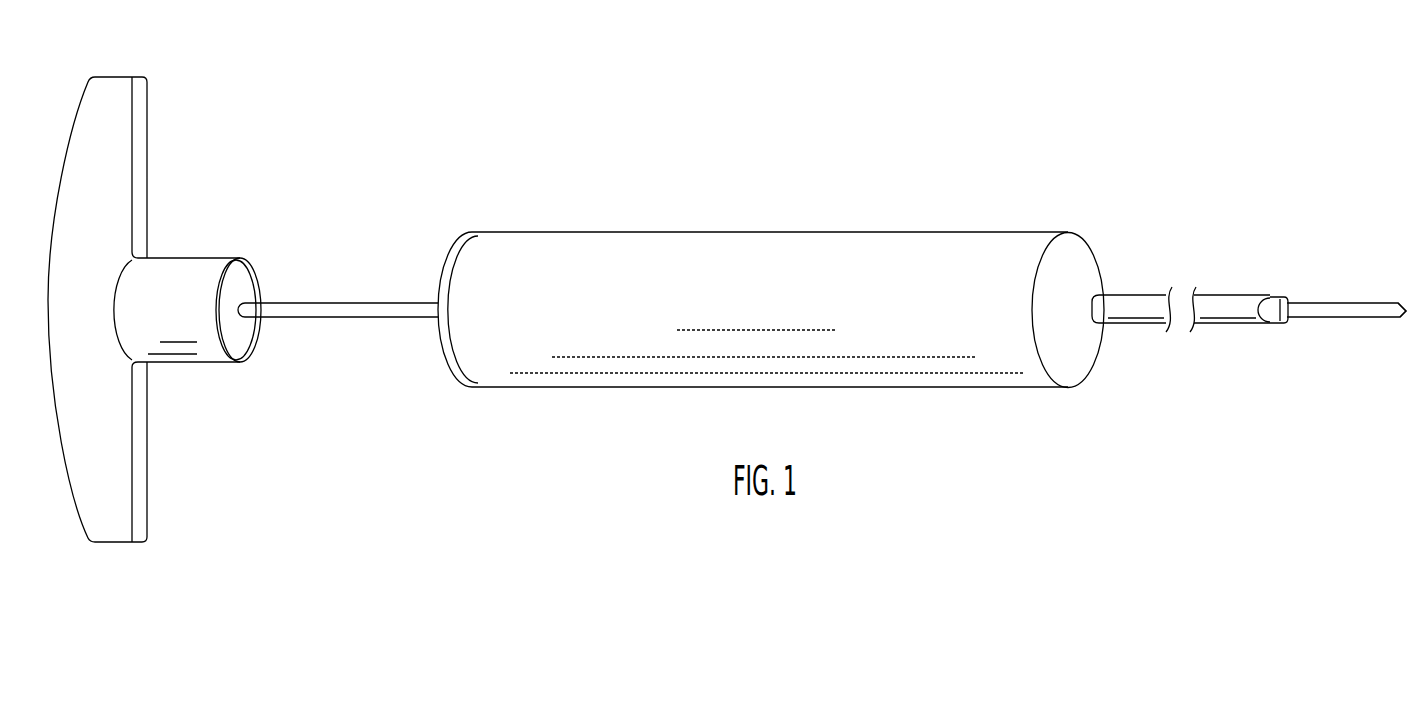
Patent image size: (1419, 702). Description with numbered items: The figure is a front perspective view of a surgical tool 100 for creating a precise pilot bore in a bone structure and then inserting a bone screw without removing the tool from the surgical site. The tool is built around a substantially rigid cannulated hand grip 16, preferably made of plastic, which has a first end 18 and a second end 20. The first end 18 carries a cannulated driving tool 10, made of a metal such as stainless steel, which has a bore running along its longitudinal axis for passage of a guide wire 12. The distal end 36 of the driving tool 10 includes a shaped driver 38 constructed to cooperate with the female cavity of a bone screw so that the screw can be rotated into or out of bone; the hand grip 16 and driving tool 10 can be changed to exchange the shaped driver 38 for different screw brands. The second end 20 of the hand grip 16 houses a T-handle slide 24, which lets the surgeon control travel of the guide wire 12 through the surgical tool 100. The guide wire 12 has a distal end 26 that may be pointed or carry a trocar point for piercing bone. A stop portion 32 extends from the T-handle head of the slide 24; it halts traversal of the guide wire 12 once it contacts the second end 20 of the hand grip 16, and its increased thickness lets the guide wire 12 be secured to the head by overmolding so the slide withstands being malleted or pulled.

The surgical tool 100 is at (673, 152).
The T-handle slide 24 is at (103, 217).
The stop portion 32 is at (243, 363).
The guide wire 12 is at (312, 303).
The second end 20 is at (455, 247).
The cannulated hand grip 16 is at (638, 307).
The first end 18 is at (1070, 232).
The cannulated driving tool 10 is at (1137, 305).
The shaped driver 38 is at (1281, 297).
The distal end 36 is at (1282, 323).
The distal end 26 is at (1400, 318).